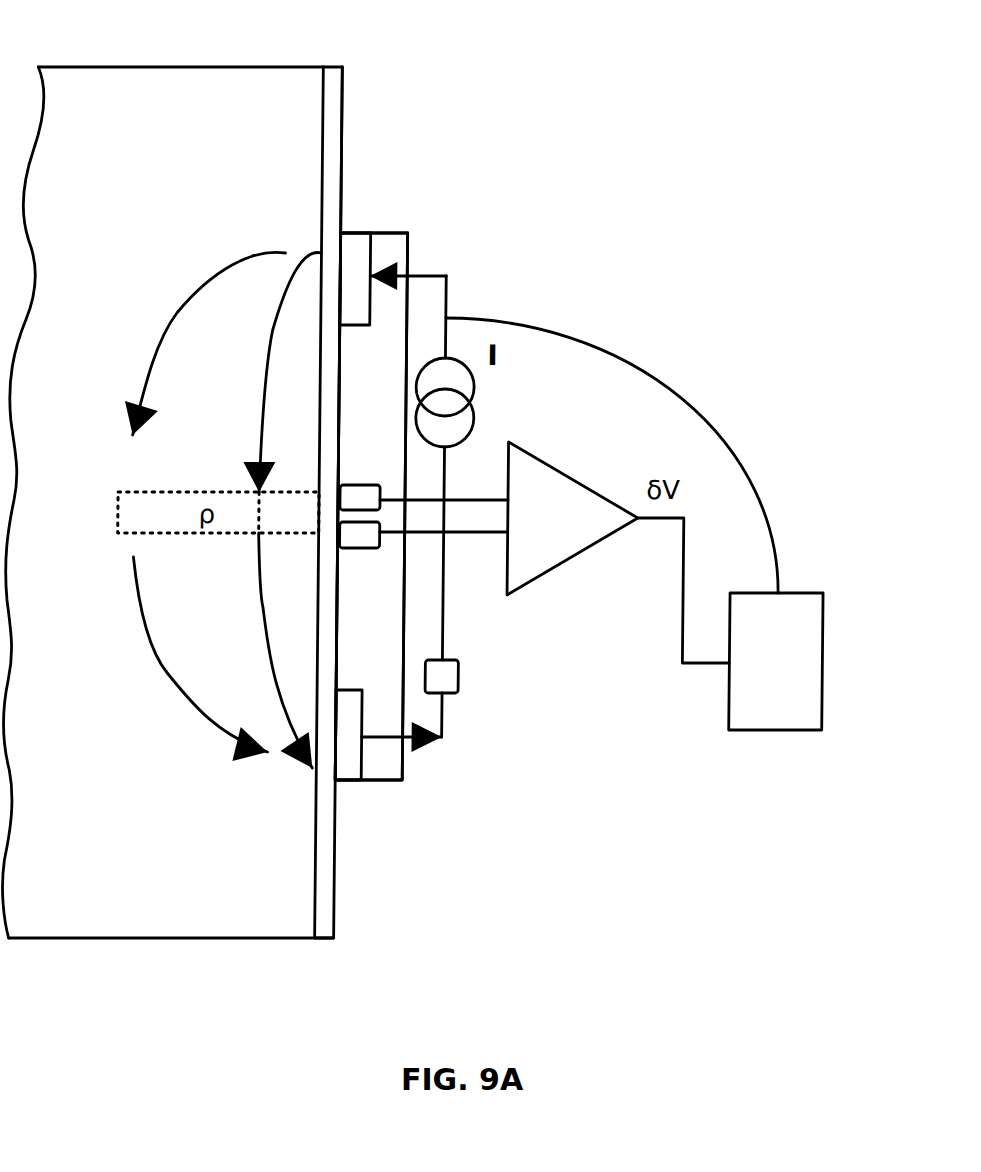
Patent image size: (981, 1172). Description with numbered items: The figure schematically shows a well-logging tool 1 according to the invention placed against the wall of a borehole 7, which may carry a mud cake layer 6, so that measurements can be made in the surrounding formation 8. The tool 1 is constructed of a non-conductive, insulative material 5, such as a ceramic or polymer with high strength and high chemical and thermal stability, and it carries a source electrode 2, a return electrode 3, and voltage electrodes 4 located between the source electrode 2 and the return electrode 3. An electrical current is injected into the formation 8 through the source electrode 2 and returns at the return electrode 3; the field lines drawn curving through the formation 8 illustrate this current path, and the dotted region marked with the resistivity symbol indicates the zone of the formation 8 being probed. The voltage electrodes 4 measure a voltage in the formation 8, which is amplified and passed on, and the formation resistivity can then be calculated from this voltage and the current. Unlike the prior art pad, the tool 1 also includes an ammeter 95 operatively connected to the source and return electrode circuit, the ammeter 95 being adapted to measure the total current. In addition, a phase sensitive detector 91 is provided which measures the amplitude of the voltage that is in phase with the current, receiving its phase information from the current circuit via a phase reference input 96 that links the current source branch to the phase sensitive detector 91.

The tool 1 is at (460, 243).
The source electrode 2 is at (347, 248).
The return electrode 3 is at (346, 760).
The voltage electrodes 4 is at (367, 495).
The non-conductive insulative material 5 is at (373, 350).
The mud cake layer 6 is at (340, 153).
The borehole 7 is at (323, 102).
The formation 8 is at (188, 136).
The phase sensitive detector 91 is at (769, 703).
The ammeter 95 is at (444, 683).
The phase reference input 96 is at (689, 398).